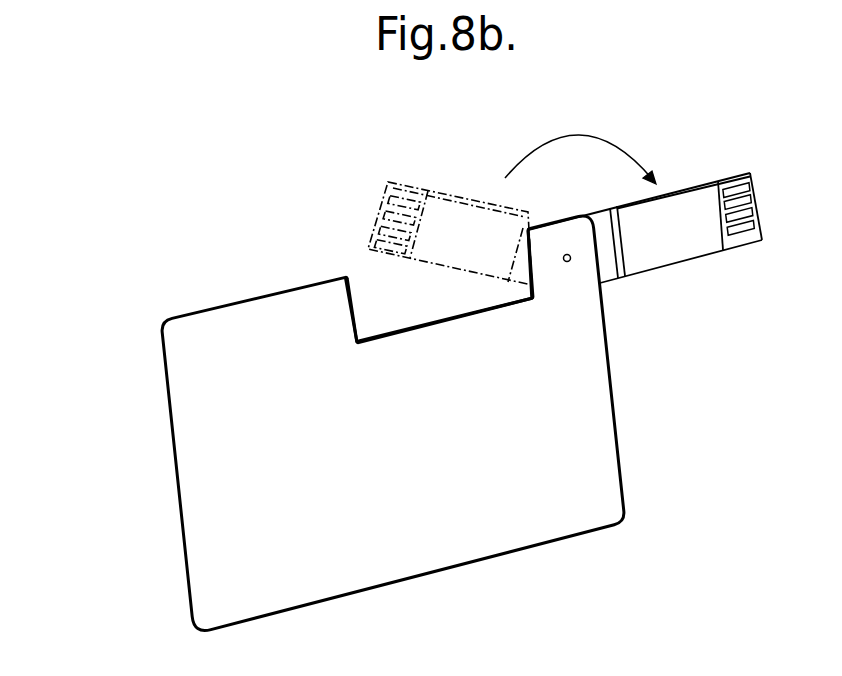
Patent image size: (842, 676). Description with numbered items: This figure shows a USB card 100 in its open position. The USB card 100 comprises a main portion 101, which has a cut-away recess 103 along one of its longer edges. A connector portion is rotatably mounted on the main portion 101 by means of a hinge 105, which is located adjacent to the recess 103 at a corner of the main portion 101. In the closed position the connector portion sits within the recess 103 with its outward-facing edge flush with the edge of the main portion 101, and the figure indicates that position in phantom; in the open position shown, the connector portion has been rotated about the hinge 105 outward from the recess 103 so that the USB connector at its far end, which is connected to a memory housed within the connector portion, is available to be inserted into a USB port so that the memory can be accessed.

The USB card 100 is at (692, 398).
The main portion 101 is at (213, 492).
The cut-away recess 103 is at (363, 310).
The hinge 105 is at (567, 253).